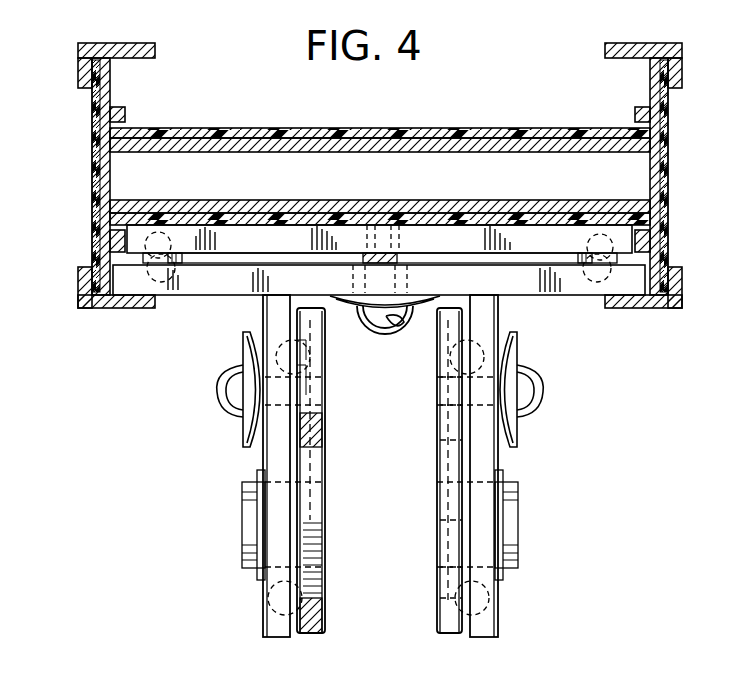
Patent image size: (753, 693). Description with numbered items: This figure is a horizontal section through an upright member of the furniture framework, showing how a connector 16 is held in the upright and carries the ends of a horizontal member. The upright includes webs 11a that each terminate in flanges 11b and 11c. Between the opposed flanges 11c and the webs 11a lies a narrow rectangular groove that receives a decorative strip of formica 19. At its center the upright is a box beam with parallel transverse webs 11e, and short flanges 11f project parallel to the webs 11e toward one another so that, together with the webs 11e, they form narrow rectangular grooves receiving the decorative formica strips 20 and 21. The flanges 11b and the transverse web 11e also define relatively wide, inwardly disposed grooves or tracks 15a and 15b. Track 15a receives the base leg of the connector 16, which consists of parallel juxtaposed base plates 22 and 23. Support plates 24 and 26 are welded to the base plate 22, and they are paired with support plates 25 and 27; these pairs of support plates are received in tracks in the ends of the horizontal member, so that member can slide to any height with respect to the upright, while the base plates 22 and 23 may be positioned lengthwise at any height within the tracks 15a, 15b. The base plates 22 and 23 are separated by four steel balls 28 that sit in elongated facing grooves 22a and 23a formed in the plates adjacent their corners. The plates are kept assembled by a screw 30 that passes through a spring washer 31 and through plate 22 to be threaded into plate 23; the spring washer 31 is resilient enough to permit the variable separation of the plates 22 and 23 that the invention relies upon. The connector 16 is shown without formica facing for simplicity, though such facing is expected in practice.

The web 11a is at (96, 182).
The flange 11b is at (130, 42).
The flange 11c is at (78, 70).
The transverse web 11e is at (402, 152).
The short flange 11f is at (126, 116).
The track 15a is at (120, 307).
The track 15b is at (116, 84).
The connector 16 is at (226, 338).
The formica strip 19 is at (94, 118).
The formica strip 20 is at (345, 133).
The formica strip 21 is at (203, 212).
The base plate 22 is at (200, 282).
The elongated groove 22a is at (597, 282).
The base plate 23 is at (300, 238).
The elongated groove 23a is at (158, 230).
The support plate 24 is at (486, 636).
The support plate 25 is at (450, 636).
The support plate 26 is at (272, 632).
The support plate 27 is at (308, 636).
The steel ball 28 is at (186, 260).
The screw 30 is at (392, 328).
The spring washer 31 is at (352, 306).